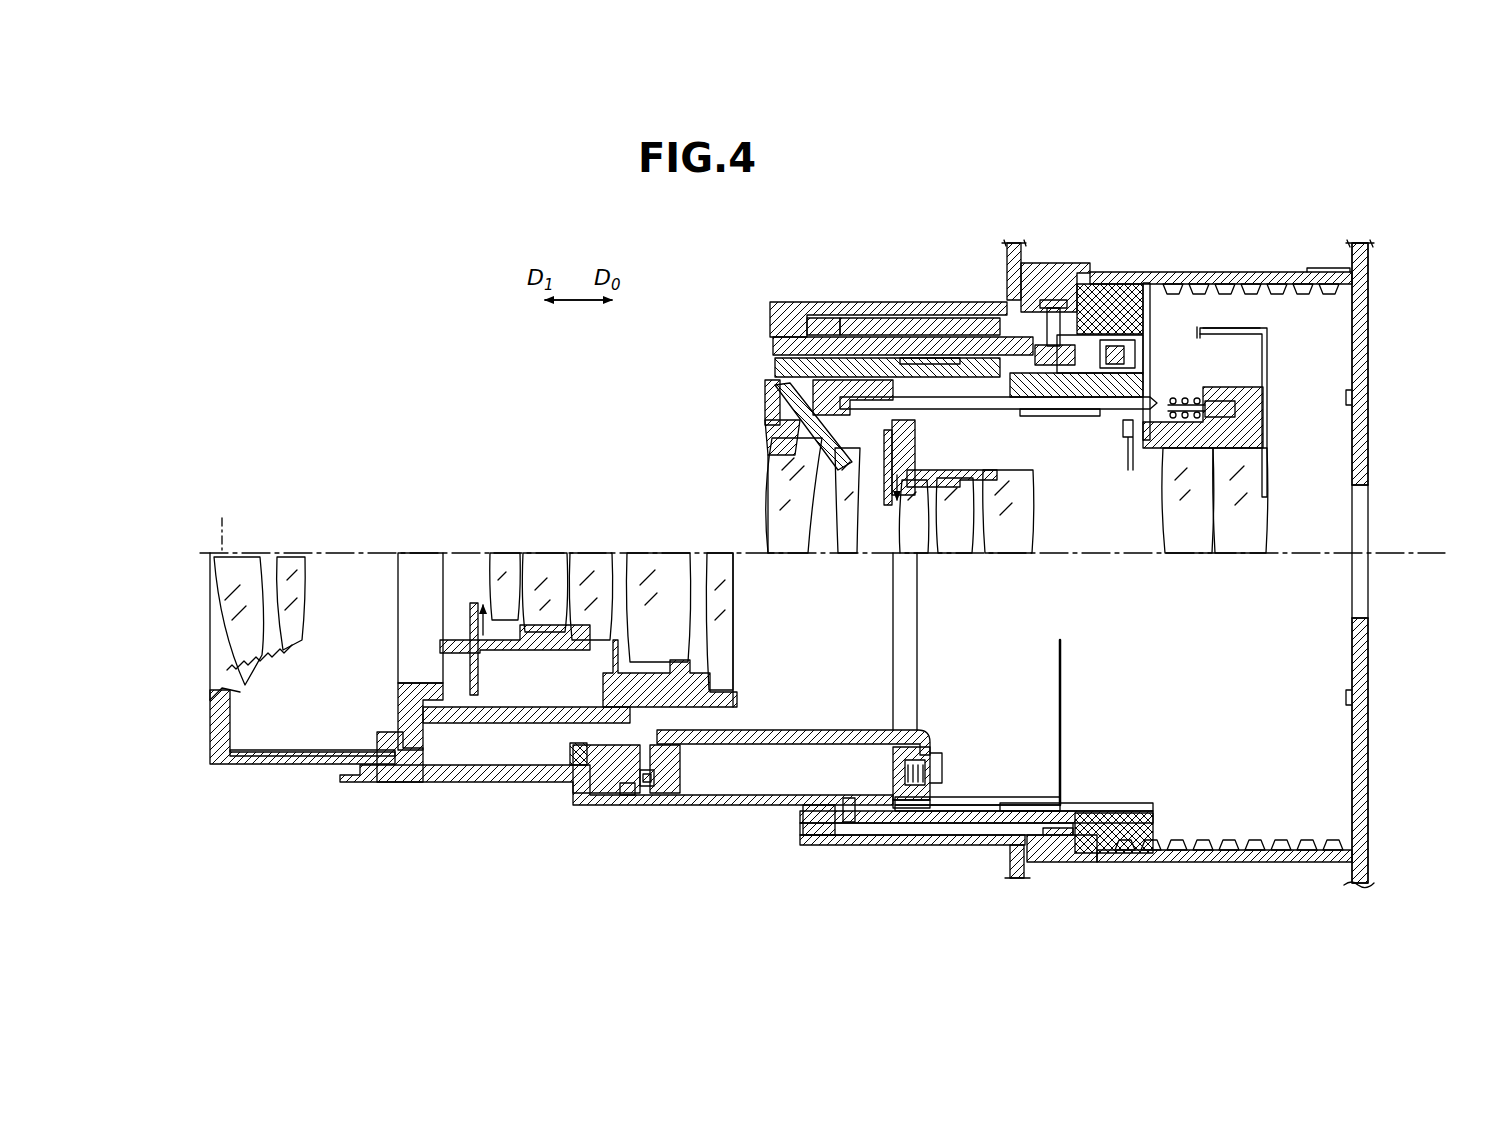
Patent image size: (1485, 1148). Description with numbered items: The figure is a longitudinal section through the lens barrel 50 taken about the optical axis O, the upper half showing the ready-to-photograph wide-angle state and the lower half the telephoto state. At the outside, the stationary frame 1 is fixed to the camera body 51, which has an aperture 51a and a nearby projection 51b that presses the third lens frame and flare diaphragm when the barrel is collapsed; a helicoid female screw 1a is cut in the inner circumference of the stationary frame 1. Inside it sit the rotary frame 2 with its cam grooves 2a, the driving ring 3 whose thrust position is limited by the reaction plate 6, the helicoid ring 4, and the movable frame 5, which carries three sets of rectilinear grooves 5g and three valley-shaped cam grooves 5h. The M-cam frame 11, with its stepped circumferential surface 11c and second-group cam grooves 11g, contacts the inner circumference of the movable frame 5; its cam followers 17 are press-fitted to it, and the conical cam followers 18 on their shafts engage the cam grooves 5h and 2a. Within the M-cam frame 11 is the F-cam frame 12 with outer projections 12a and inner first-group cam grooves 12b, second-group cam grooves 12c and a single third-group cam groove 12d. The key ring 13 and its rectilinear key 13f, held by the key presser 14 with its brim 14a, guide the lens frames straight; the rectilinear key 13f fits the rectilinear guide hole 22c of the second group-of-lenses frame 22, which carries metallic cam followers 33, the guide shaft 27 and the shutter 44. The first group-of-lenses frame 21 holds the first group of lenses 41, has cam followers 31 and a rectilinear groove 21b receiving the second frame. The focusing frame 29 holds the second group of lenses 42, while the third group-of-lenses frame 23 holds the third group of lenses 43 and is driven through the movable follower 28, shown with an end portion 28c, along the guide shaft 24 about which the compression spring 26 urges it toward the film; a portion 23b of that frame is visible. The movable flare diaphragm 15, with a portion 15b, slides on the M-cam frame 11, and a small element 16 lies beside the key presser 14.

The stationary frame 1 is at (1320, 272).
The helicoid female screw 1a is at (1240, 290).
The rotary frame 2 is at (870, 318).
The cam grooves 2a is at (822, 320).
The driving ring 3 is at (1055, 270).
The helicoid ring 4 is at (1120, 300).
The movable frame 5 is at (805, 303).
The rectilinear grooves 5g is at (1115, 807).
The cam grooves 5h is at (1000, 320).
The reaction plate 6 is at (1013, 262).
The M-cam frame 11 is at (780, 338).
The stepped circumferential surface 11c is at (960, 800).
The second group-of-lenses cam grooves 11g is at (1105, 290).
The F-cam frame 12 is at (778, 365).
The projections 12a is at (627, 800).
The first group-of-lenses cam grooves 12b is at (965, 385).
The second group-of-lenses cam grooves 12c is at (1040, 397).
The third group-of-lenses cam groove 12d is at (940, 372).
The key ring 13 is at (1160, 320).
The rectilinear key 13f is at (850, 728).
The key presser 14 is at (893, 760).
The brim 14a is at (910, 808).
The movable flare diaphragm 15 is at (1267, 368).
The flange of guide plate 15b is at (1225, 330).
The nut 16 is at (940, 760).
The cam followers 17 is at (1033, 325).
The cam followers 18 is at (830, 818).
The first group-of-lenses frame 21 is at (770, 390).
The rectilinear groove 21b is at (300, 757).
The second group-of-lenses frame 22 is at (768, 430).
The rectilinear guide hole 22c is at (660, 718).
The third group-of-lenses frame 23 is at (1250, 422).
The projection of third lens frame 23b is at (1128, 440).
The guide shaft 24 is at (1230, 420).
The compression spring 26 is at (1182, 398).
The guide shaft 27 is at (1093, 416).
The movable follower 28 is at (1158, 393).
The end of guide shaft 28c is at (1135, 448).
The focusing frame 29 is at (960, 470).
The cam followers 31 is at (395, 782).
The metallic cam followers 33 is at (578, 765).
The first group of lenses 41 is at (245, 580).
The second group of lenses 42 is at (545, 575).
The third group of lenses 43 is at (668, 575).
The shutter 44 is at (915, 462).
The lens barrel 50 is at (1278, 200).
The camera body 51 is at (1368, 262).
The aperture 51a is at (1355, 513).
The projection 51b is at (1348, 397).
The optical axis O is at (822, 522).